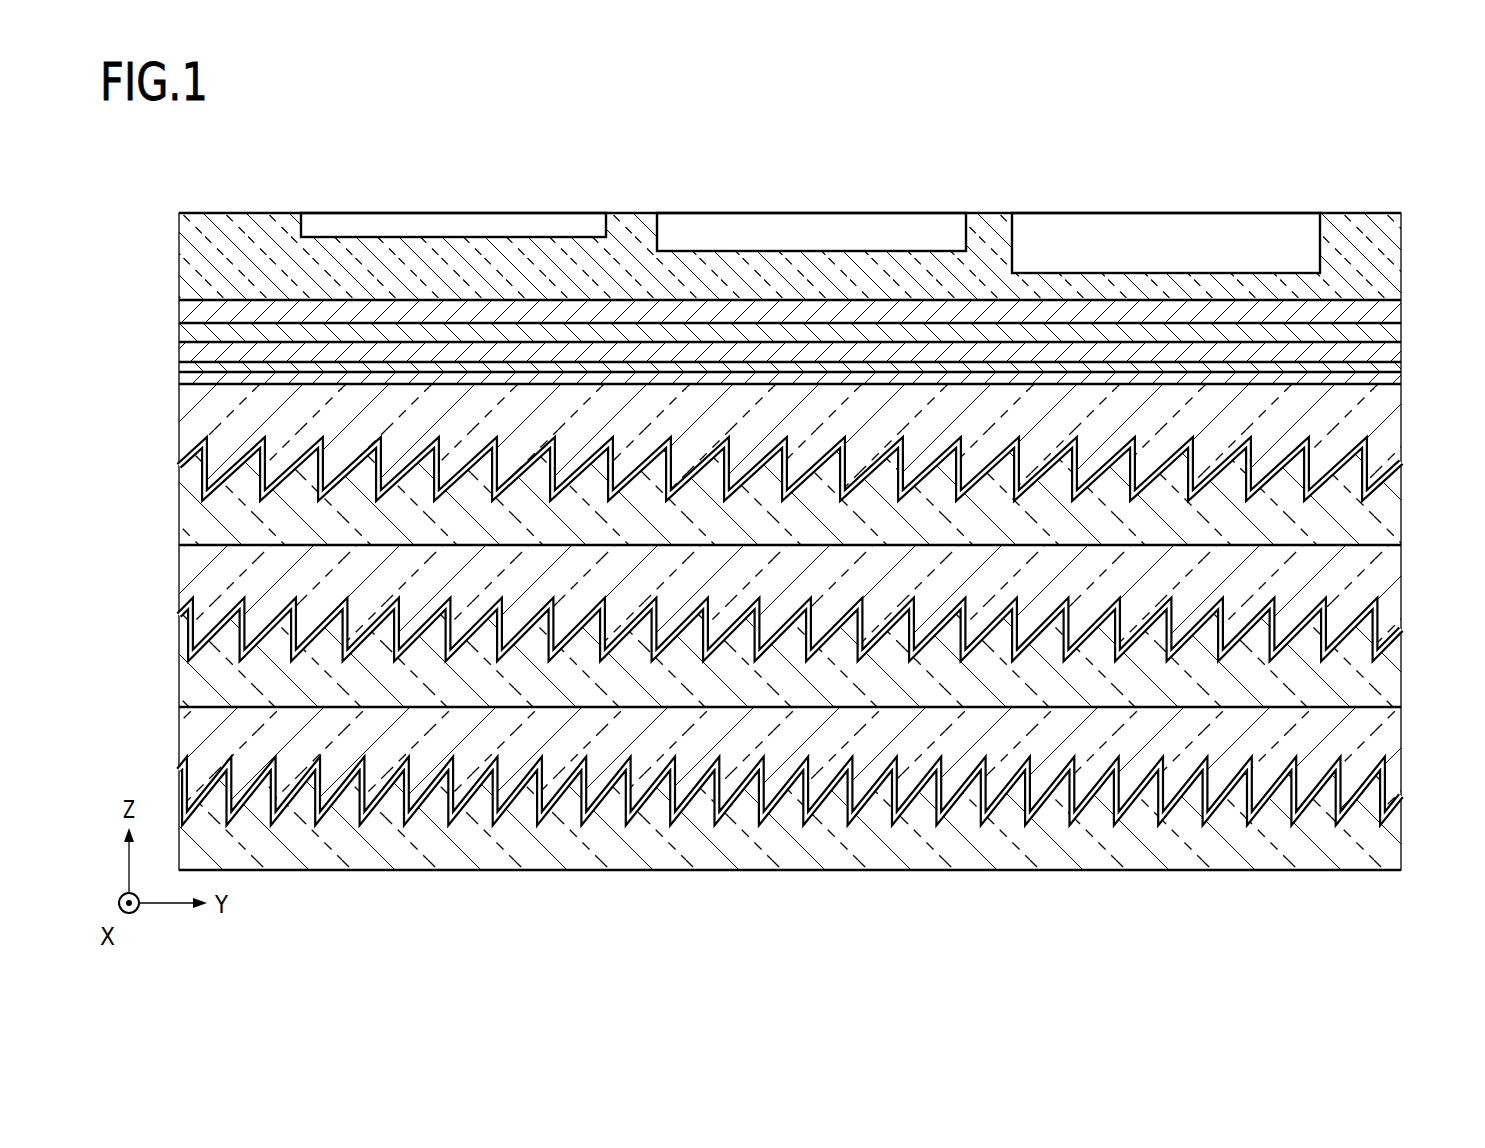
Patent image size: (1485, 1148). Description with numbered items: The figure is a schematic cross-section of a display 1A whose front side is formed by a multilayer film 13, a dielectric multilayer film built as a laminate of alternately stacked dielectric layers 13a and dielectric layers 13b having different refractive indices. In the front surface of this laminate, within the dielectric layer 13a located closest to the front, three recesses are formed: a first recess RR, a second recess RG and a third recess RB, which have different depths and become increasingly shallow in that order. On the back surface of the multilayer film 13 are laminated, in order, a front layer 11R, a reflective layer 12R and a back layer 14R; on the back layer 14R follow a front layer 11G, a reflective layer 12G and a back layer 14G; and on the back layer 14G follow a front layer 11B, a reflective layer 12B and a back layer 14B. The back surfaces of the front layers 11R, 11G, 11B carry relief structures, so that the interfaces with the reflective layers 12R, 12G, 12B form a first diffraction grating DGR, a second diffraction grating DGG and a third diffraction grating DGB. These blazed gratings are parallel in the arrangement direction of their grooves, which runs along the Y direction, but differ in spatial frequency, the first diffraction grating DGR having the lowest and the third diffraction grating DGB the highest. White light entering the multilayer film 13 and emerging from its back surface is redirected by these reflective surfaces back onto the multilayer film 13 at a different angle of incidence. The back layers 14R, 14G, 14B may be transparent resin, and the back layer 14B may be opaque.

The display 1A is at (1386, 167).
The multilayer film 13 is at (790, 311).
The dielectric layer 13a is at (192, 245).
The dielectric layer 13b is at (190, 312).
The front layer 11R is at (1368, 422).
The reflective layer 12R is at (1402, 465).
The back layer 14R is at (1368, 527).
The front layer 11G is at (1368, 582).
The reflective layer 12G is at (1401, 627).
The back layer 14G is at (1368, 683).
The front layer 11B is at (1368, 724).
The reflective layer 12B is at (1392, 790).
The back layer 14B is at (1368, 832).
The first diffraction grating DGR is at (823, 332).
The second diffraction grating DGG is at (823, 412).
The third diffraction grating DGB is at (823, 493).
The first recess RR is at (1162, 232).
The second recess RG is at (808, 228).
The third recess RB is at (452, 228).